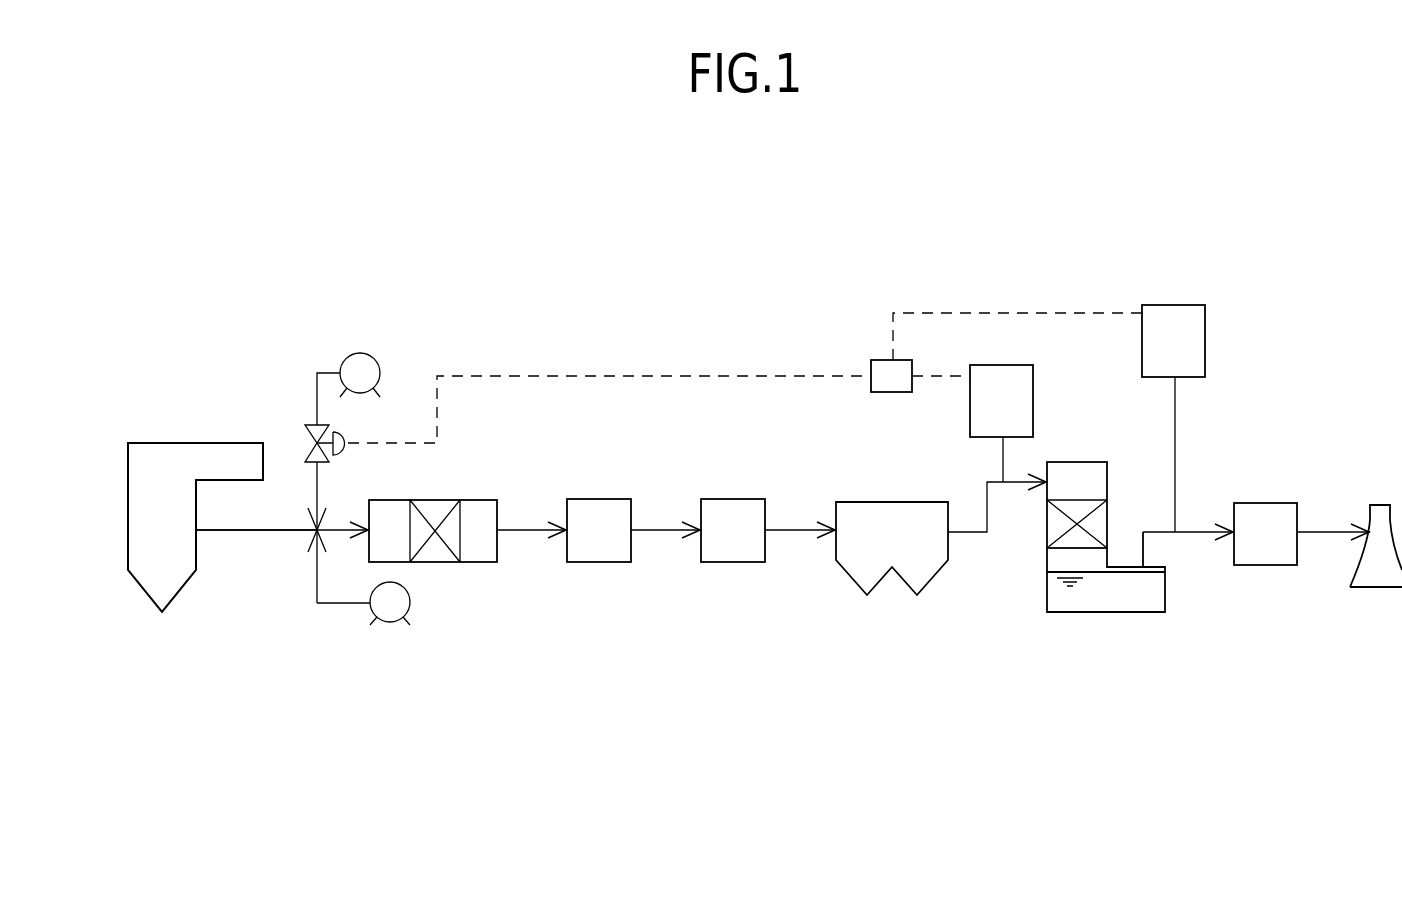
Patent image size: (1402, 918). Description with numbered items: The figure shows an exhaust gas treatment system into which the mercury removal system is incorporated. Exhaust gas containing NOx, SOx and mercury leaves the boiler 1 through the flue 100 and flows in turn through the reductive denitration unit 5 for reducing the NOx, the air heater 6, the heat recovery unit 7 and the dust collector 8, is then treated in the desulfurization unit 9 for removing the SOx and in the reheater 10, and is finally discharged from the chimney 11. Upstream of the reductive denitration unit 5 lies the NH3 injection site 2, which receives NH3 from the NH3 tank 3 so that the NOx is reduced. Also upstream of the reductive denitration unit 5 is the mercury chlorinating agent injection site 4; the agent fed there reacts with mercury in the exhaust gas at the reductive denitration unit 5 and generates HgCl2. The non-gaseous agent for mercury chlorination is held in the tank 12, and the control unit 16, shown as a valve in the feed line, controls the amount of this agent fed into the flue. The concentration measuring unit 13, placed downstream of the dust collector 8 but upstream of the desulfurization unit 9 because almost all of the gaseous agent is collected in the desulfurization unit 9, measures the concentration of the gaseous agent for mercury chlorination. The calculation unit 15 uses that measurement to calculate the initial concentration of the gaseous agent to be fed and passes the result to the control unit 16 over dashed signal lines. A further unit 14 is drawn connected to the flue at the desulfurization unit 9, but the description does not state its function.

The boiler 1 is at (138, 462).
The flue gas duct 100 is at (230, 532).
The NH3 injection site 2 is at (314, 533).
The NH3 tank 3 is at (410, 602).
The mercury chlorinating agent injection site 4 is at (322, 527).
The reductive denitration unit 5 is at (433, 500).
The air heater 6 is at (597, 563).
The heat recovery unit 7 is at (730, 563).
The dust collector 8 is at (888, 502).
The desulfurization unit 9 is at (1107, 613).
The reheater 10 is at (1257, 503).
The chimney 11 is at (1378, 505).
The tank of non-gaseous agent for mercury chlorination 12 is at (358, 360).
The concentration measuring unit 13 is at (1002, 365).
The measuring device 14 is at (1170, 305).
The calculation unit 15 is at (871, 360).
The control unit 16 is at (313, 440).